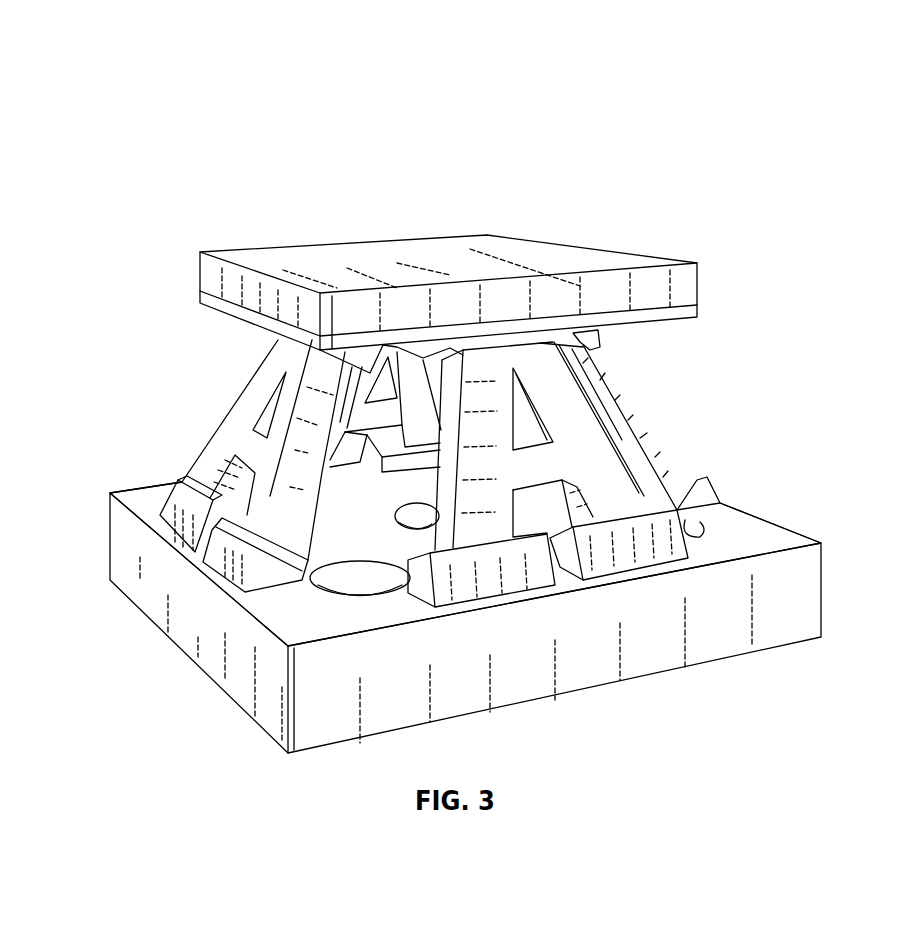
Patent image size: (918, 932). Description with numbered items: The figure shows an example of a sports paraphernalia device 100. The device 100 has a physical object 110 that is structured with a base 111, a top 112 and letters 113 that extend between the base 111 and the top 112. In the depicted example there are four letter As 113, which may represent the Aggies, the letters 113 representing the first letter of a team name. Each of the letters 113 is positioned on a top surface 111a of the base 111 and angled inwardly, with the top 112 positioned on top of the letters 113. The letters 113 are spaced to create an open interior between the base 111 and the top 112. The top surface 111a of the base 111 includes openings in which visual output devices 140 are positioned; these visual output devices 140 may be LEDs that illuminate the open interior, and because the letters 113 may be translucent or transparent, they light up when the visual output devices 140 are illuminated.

The sports paraphernalia device 100 is at (112, 76).
The physical object 110 is at (128, 250).
The base 111 is at (637, 663).
The top surface 111a is at (310, 636).
The top 112 is at (421, 248).
The letters 113 is at (368, 420).
The visual output devices 140 is at (325, 585).